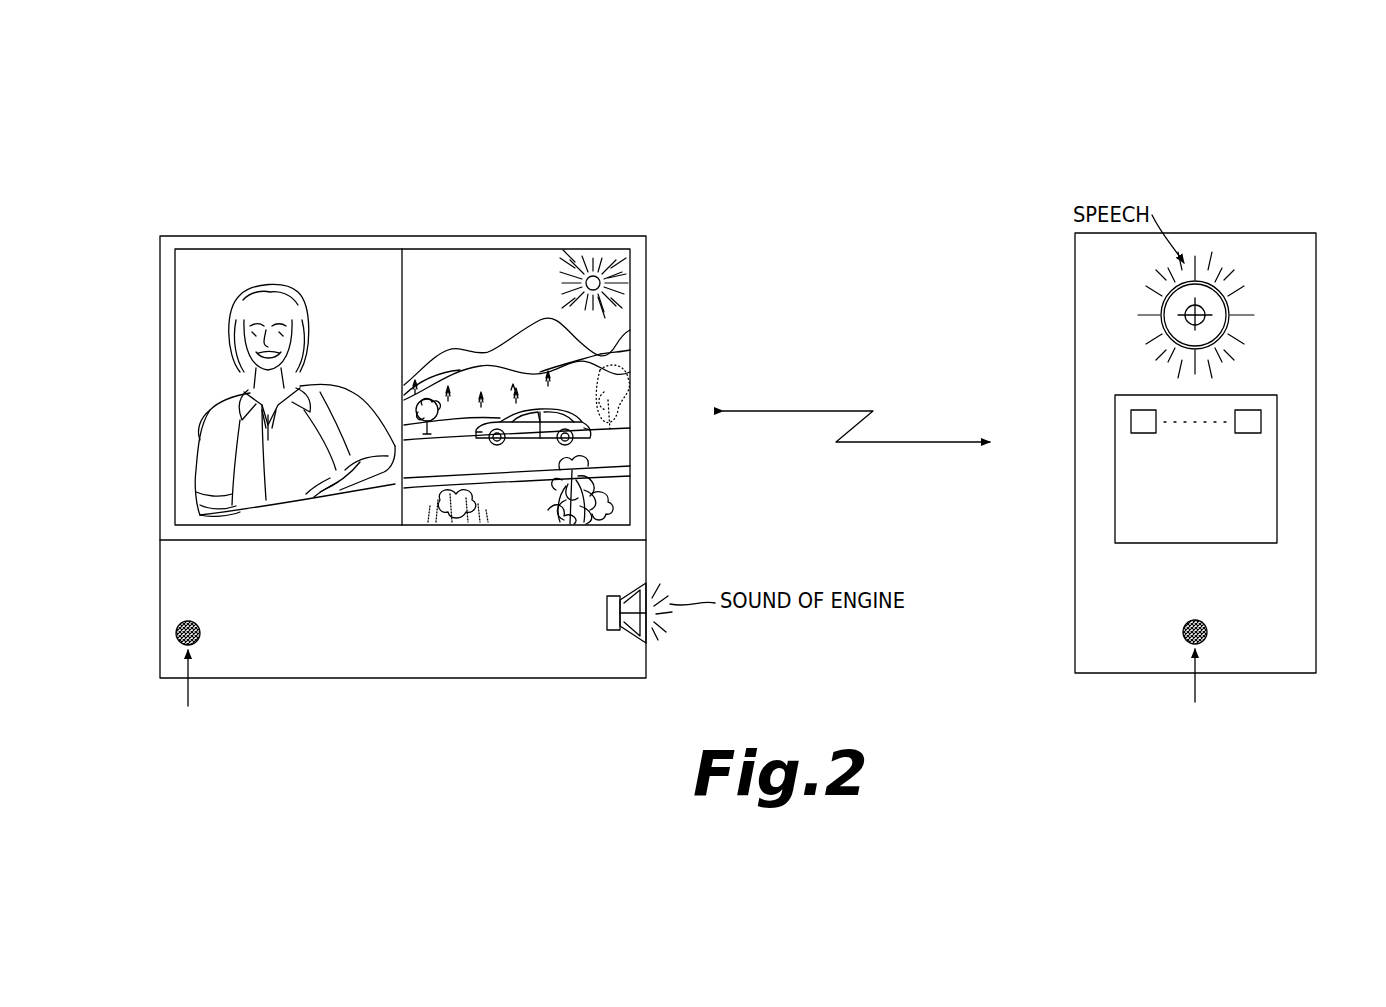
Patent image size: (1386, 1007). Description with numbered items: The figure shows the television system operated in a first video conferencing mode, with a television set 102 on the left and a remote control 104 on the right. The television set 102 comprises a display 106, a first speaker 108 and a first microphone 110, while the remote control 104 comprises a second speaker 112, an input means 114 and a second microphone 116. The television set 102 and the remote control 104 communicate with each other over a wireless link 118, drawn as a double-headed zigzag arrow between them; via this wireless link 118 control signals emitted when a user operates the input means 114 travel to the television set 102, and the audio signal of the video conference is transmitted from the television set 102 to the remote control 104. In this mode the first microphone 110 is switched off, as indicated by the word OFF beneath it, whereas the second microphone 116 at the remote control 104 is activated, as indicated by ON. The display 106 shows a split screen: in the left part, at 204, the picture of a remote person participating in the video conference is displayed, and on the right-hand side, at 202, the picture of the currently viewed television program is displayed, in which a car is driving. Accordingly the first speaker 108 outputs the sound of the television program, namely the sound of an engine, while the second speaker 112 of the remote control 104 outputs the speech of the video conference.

The television set 102 is at (415, 210).
The remote control 104 is at (1227, 204).
The display 106 is at (262, 268).
The first speaker 108 is at (606, 603).
The first microphone 110 is at (176, 632).
The second speaker 112 is at (1232, 297).
The input means 114 is at (1280, 474).
The second microphone 116 is at (1185, 622).
The wireless link 118 is at (866, 443).
The picture of a currently viewed television program 202 is at (622, 353).
The picture of a remote person participating in the video conference 204 is at (188, 405).